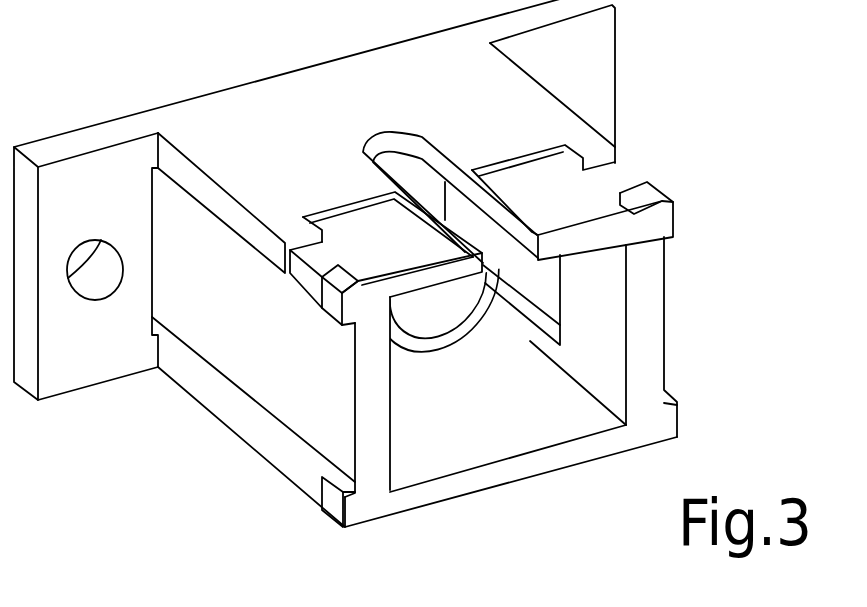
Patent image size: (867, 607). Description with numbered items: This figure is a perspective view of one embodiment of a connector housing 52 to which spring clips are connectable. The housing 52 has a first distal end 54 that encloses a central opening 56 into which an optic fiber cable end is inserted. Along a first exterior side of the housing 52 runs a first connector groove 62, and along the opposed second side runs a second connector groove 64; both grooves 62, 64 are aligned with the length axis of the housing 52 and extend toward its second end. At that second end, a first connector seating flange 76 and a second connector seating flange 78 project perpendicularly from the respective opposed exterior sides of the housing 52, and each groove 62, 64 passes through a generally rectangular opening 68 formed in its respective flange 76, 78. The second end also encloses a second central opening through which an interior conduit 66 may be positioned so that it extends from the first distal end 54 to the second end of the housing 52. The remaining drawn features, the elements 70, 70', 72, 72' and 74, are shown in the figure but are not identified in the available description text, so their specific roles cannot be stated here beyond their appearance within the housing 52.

The first connector housing 52 is at (292, 131).
The first distal end 54 is at (660, 421).
The central opening 56 is at (430, 455).
The first connector groove 62 is at (285, 346).
The second connector groove 64 is at (667, 291).
The interior conduit 66 is at (435, 318).
The rectangular opening 68 is at (155, 277).
The contact plate 70 is at (392, 244).
The contact plate 70' is at (572, 202).
The latch tab 72 is at (290, 397).
The latch tab 72' is at (659, 171).
The spring arm 74 is at (547, 293).
The first connector seating flange 76 is at (100, 167).
The second connector seating flange 78 is at (585, 68).